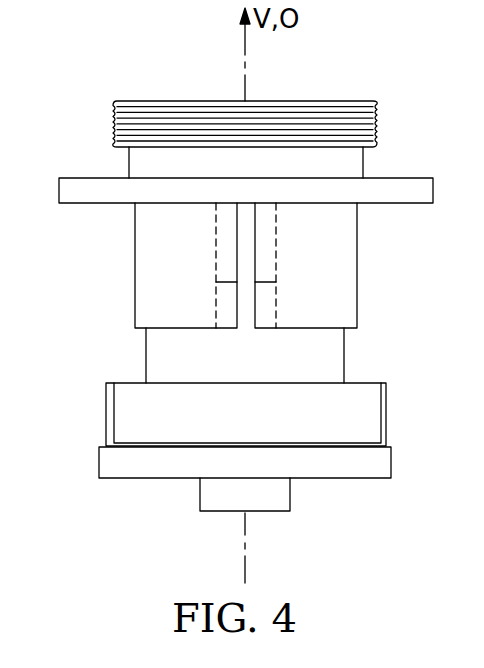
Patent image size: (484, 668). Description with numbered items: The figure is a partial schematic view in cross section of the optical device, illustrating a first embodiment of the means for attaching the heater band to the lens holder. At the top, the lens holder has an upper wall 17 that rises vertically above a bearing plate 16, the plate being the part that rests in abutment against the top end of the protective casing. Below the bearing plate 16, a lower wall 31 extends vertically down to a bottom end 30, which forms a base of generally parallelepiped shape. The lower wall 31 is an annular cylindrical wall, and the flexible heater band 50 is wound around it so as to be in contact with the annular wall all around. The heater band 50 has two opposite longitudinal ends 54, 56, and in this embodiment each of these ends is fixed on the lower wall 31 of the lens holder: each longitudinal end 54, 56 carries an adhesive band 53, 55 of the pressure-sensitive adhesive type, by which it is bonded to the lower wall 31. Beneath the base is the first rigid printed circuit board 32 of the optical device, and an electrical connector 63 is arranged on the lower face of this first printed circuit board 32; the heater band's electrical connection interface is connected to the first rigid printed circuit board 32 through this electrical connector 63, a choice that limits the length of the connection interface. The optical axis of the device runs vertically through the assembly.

The bearing plate 16 is at (383, 178).
The upper wall 17 is at (120, 163).
The bottom end 30 is at (398, 428).
The lower wall 31 is at (130, 361).
The first rigid printed circuit board 32 is at (85, 478).
The heater band 50 is at (368, 278).
The adhesive band 53 is at (266, 225).
The longitudinal end 54 is at (256, 282).
The adhesive band 55 is at (222, 225).
The longitudinal end 56 is at (237, 282).
The electrical connector 63 is at (210, 497).